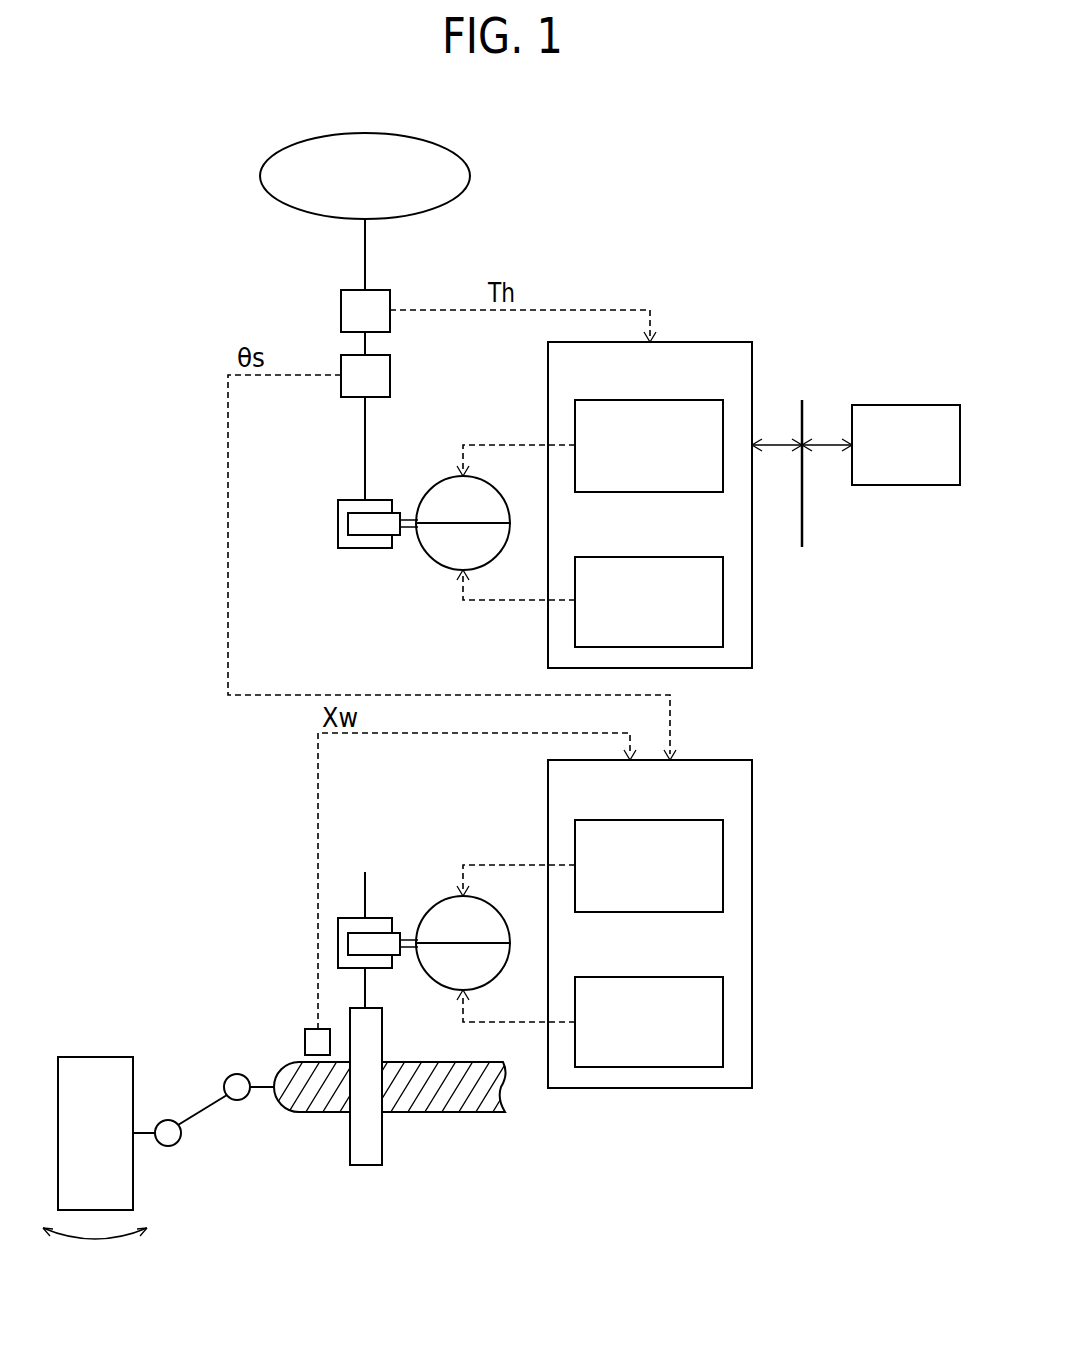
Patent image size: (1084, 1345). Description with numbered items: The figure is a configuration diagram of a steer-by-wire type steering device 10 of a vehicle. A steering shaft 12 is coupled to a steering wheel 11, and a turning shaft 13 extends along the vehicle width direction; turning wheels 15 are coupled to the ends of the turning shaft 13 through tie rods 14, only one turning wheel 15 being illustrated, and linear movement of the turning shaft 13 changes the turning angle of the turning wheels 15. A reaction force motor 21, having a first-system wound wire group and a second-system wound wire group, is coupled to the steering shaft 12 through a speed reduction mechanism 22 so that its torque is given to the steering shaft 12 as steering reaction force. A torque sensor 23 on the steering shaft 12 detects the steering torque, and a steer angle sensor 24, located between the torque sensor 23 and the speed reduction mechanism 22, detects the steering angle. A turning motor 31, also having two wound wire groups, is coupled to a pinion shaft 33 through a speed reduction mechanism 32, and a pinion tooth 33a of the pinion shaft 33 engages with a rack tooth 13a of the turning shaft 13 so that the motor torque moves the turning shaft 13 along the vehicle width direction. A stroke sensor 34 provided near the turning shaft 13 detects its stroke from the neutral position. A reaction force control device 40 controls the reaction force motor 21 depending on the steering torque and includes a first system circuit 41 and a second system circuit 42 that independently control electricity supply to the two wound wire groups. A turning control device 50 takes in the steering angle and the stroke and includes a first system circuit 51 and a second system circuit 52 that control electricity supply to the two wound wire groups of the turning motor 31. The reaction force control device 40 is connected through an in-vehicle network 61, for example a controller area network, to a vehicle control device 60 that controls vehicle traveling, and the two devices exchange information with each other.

The steering device 10 is at (204, 316).
The steering wheel 11 is at (260, 176).
The steering shaft 12 is at (363, 257).
The turning shaft 13 is at (398, 1113).
The rack tooth 13a is at (423, 1098).
The tie rod 14 is at (201, 1109).
The turning wheel 15 is at (94, 1057).
The reaction force motor 21 is at (433, 486).
The speed reduction mechanism 22 is at (331, 562).
The torque sensor 23 is at (341, 314).
The steer angle sensor 24 is at (346, 400).
The turning motor 31 is at (433, 904).
The speed reduction mechanism 32 is at (389, 896).
The pinion shaft 33 is at (367, 985).
The pinion tooth 33a is at (375, 1032).
The stroke sensor 34 is at (312, 1029).
The reaction force control device 40 is at (650, 478).
The first system circuit 41 is at (677, 492).
The second system circuit 42 is at (605, 557).
The turning control device 50 is at (650, 896).
The first system circuit 51 is at (677, 912).
The second system circuit 52 is at (605, 977).
The vehicle control device 60 is at (896, 395).
The in-vehicle network 61 is at (804, 417).